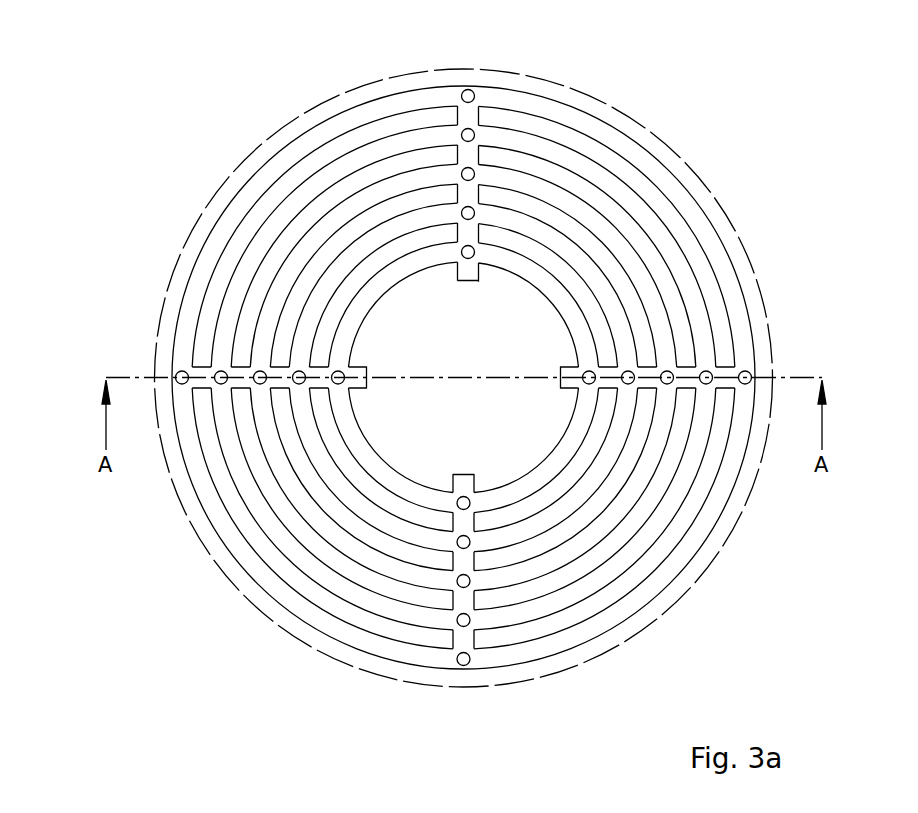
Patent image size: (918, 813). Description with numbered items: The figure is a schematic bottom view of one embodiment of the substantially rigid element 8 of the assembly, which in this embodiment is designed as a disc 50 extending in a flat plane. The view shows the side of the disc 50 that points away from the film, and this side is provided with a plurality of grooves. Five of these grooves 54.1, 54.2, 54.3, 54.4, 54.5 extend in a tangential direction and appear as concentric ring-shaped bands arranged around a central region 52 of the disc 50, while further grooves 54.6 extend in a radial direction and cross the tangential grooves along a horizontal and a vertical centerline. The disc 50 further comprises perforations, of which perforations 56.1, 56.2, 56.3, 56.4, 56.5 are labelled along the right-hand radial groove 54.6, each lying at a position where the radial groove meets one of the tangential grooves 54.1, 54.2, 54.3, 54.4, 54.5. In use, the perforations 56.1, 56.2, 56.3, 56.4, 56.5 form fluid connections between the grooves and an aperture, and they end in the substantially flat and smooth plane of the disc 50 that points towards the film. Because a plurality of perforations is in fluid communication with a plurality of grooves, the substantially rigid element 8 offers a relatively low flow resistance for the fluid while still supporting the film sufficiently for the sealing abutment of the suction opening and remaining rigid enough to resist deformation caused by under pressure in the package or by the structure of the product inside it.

The substantially rigid element 8 is at (208, 612).
The disc 50 is at (280, 628).
The central opening 52 is at (477, 349).
The tangential groove 54.1 is at (198, 295).
The tangential groove 54.2 is at (255, 257).
The tangential groove 54.3 is at (313, 243).
The tangential groove 54.4 is at (372, 245).
The tangential groove 54.5 is at (417, 260).
The radial groove 54.6 is at (467, 117).
The perforation 56.1 is at (589, 371).
The perforation 56.2 is at (628, 371).
The perforation 56.3 is at (667, 371).
The perforation 56.4 is at (706, 371).
The perforation 56.5 is at (745, 371).